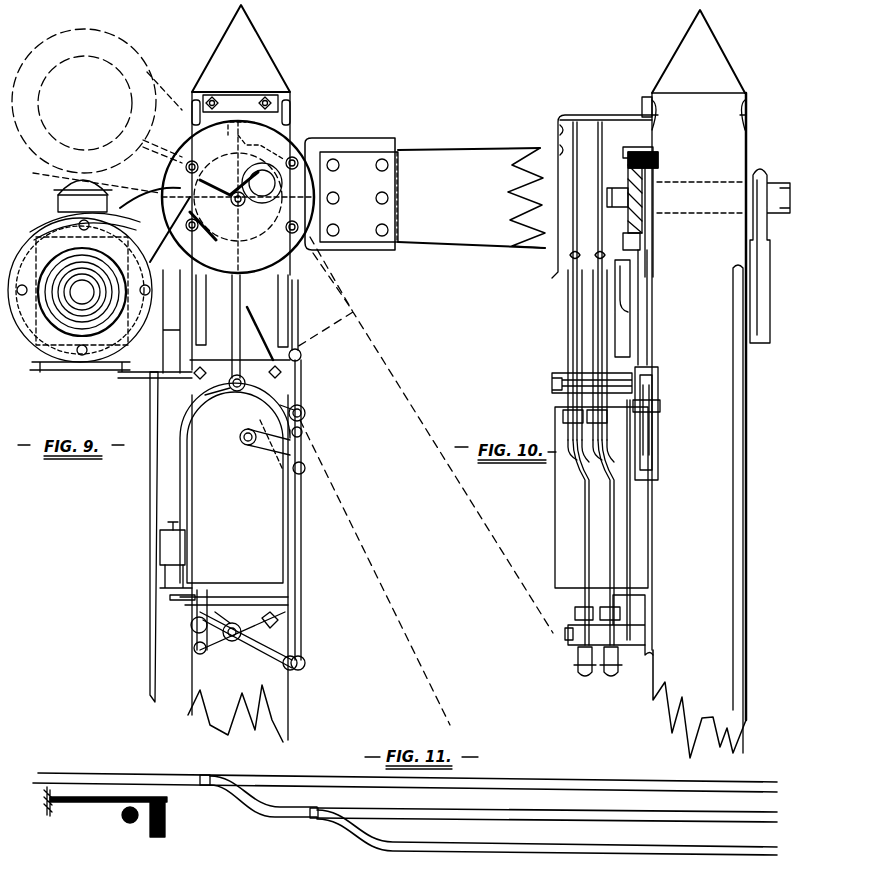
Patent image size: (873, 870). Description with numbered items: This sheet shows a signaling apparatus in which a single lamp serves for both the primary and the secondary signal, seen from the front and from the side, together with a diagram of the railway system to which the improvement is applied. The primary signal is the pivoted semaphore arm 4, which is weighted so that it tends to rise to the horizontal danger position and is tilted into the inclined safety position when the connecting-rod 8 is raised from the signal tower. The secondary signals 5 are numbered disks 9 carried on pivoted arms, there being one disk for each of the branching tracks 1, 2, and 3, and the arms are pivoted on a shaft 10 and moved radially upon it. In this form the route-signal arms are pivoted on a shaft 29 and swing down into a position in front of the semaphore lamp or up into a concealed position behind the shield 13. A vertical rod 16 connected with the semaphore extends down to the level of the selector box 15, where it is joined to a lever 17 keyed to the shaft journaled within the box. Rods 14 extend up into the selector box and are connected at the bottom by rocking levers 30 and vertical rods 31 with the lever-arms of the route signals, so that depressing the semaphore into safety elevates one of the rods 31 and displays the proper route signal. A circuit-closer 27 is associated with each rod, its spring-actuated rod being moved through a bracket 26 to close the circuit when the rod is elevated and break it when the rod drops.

In FIG. 11, the track 1 is at (406, 786).
In FIG. 11, the track 2 is at (501, 802).
In FIG. 11, the track 3 is at (554, 836).
In FIG. 9, the primary signal arm 4 is at (425, 194).
In FIG. 11, the primary signal arm 4 is at (166, 817).
In FIG. 11, the secondary signals 5 is at (125, 820).
In FIG. 9, the connecting-rod 8 is at (158, 472).
In FIG. 9, the disks 9 is at (238, 240).
In FIG. 10, the disks 9 is at (606, 183).
In FIG. 10, the shaft 10 is at (566, 634).
In FIG. 9, the screen 13 is at (256, 141).
In FIG. 10, the screen 13 is at (556, 270).
In FIG. 9, the rods 14 is at (215, 608).
In FIG. 9, the selector box 15 is at (235, 483).
In FIG. 10, the selector box 15 is at (601, 520).
In FIG. 9, the vertical rod 16 is at (294, 300).
In FIG. 10, the vertical rod 16 is at (647, 305).
In FIG. 9, the lever 17 is at (305, 413).
In FIG. 10, the lever 17 is at (652, 432).
In FIG. 9, the bracket 26 is at (186, 598).
In FIG. 9, the circuit-closer 27 is at (176, 555).
In FIG. 9, the shaft 29 is at (221, 389).
In FIG. 10, the shaft 29 is at (552, 383).
In FIG. 9, the rocking levers 30 is at (260, 652).
In FIG. 9, the vertical rods 31 is at (306, 625).
In FIG. 10, the vertical rods 31 is at (625, 536).